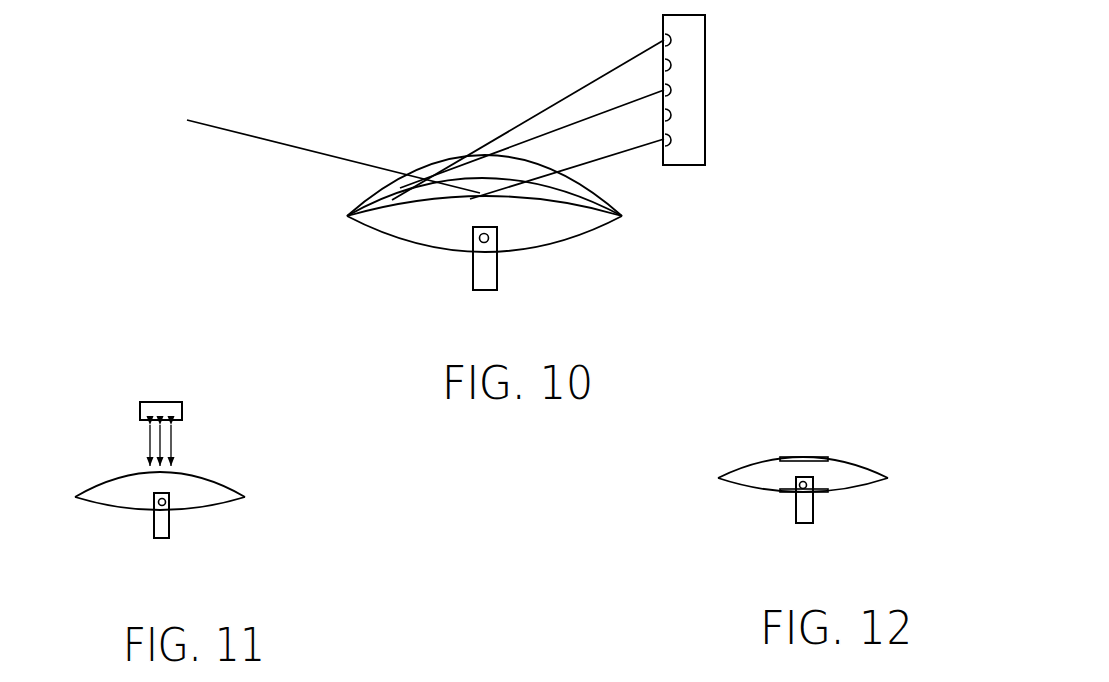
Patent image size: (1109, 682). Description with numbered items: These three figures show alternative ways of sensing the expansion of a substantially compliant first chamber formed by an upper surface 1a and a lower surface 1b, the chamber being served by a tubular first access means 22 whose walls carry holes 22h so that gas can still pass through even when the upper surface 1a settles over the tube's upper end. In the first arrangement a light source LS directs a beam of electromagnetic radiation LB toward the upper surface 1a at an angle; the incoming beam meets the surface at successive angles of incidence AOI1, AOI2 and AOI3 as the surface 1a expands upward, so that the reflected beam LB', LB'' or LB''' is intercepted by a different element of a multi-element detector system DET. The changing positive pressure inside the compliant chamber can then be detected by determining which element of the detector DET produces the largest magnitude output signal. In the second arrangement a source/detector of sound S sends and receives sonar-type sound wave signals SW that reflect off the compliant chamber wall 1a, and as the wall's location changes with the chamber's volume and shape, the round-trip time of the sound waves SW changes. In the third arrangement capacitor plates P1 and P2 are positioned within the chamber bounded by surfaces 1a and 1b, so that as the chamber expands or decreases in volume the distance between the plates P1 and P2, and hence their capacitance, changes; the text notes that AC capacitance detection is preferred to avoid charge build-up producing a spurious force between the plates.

In FIG. 10, the upper surface of substantially compliant first chamber 1a is at (533, 160).
In FIG. 11, the upper surface of substantially compliant first chamber 1a is at (230, 480).
In FIG. 12, the upper surface of substantially compliant first chamber 1a is at (873, 460).
In FIG. 10, the lower surface of substantially compliant first chamber 1b is at (571, 249).
In FIG. 11, the lower surface of substantially compliant first chamber 1b is at (107, 514).
In FIG. 12, the lower surface of substantially compliant first chamber 1b is at (757, 486).
In FIG. 10, the first access means 22 is at (485, 292).
In FIG. 11, the first access means 22 is at (152, 541).
In FIG. 12, the first access means 22 is at (794, 525).
In FIG. 10, the holes 22h is at (489, 247).
In FIG. 11, the holes 22h is at (170, 508).
In FIG. 12, the holes 22h is at (808, 493).
In FIG. 10, the multi-element detector system DET is at (714, 62).
In FIG. 10, the light source LS is at (161, 118).
In FIG. 10, the light beam LB is at (314, 157).
In FIG. 10, the reflected electromagnetic beam LB' is at (567, 165).
In FIG. 10, the reflected electromagnetic beam LB'' is at (532, 137).
In FIG. 10, the reflected electromagnetic beam LB''' is at (528, 120).
In FIG. 10, the first angle of incidence AOI1 is at (450, 196).
In FIG. 10, the second angle of incidence AOI2 is at (404, 184).
In FIG. 10, the third angle of incidence AOI3 is at (393, 155).
In FIG. 11, the source/detector of sound S is at (203, 394).
In FIG. 11, the sound wave signals SW is at (178, 441).
In FIG. 12, the capacitor plate P1 is at (781, 497).
In FIG. 12, the capacitor plate P2 is at (787, 453).